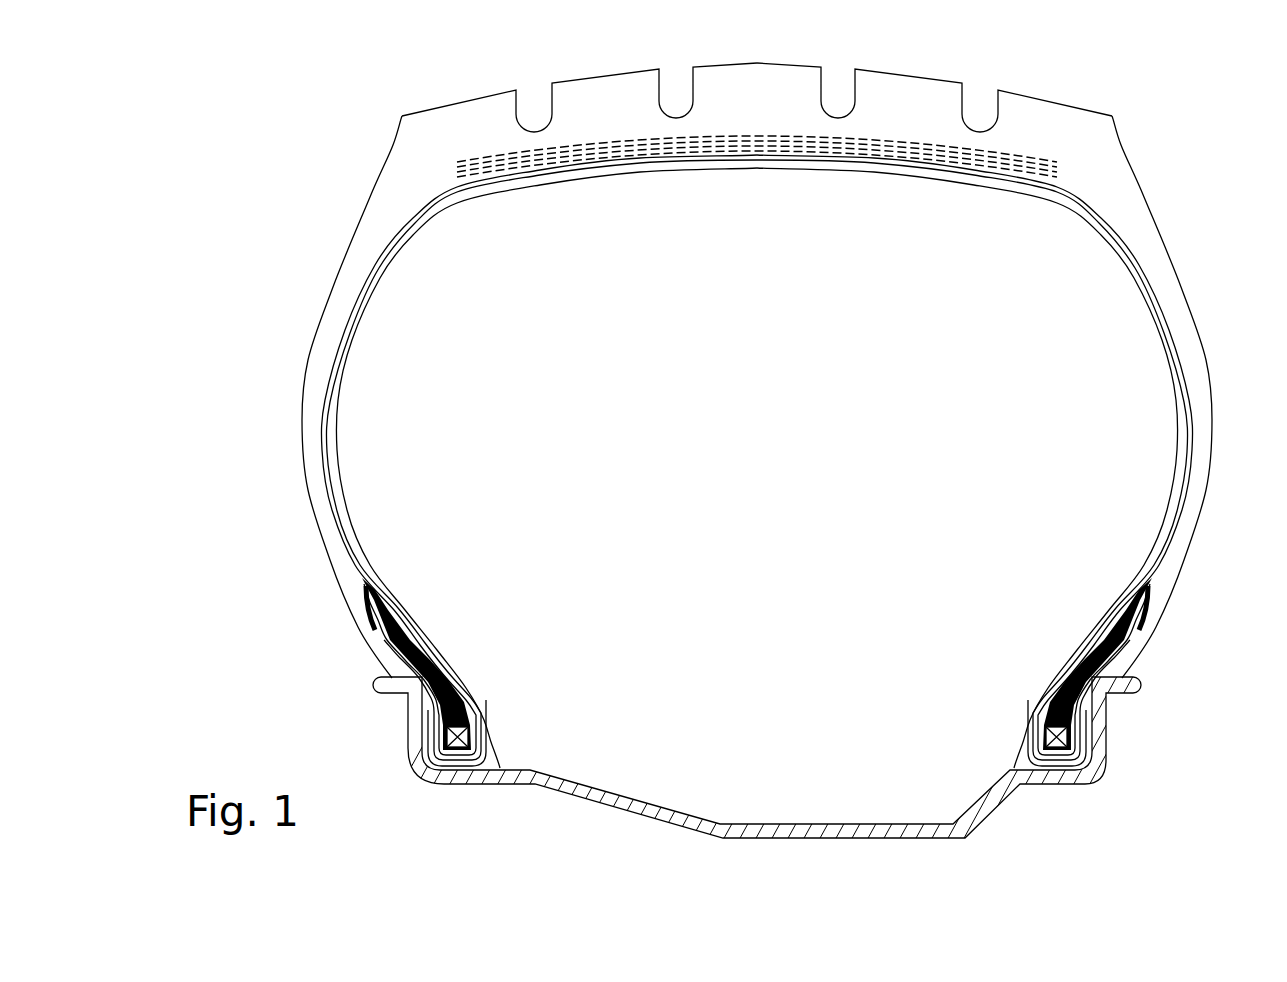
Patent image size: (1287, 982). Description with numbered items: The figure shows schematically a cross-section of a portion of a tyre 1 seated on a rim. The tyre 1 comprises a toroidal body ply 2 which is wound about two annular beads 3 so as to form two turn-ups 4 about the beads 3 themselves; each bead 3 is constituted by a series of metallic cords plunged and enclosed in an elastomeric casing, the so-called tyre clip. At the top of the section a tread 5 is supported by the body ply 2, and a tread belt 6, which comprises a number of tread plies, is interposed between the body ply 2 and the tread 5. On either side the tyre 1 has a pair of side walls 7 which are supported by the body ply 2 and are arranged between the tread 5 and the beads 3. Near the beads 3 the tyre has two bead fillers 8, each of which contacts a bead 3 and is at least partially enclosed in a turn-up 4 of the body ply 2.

The tyre 1 is at (711, 405).
The toroidal body ply 2 is at (338, 320).
The annular bead 3 is at (480, 742).
The turn-up 4 is at (338, 683).
The tread 5 is at (883, 110).
The tread belt 6 is at (737, 160).
The side wall 7 is at (306, 416).
The bead filler 8 is at (466, 688).